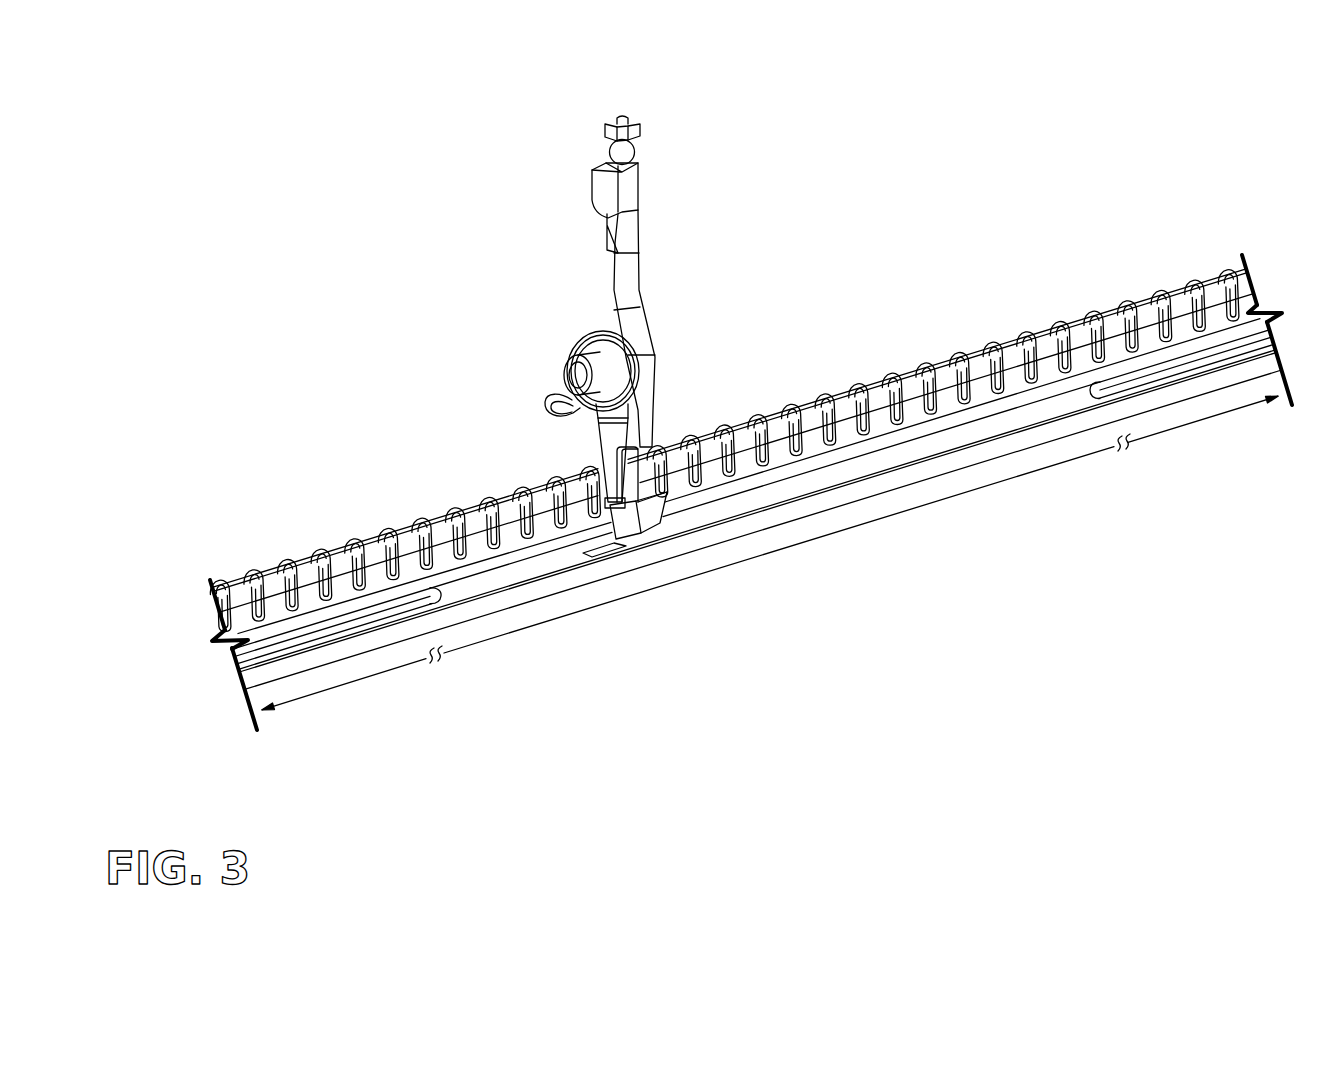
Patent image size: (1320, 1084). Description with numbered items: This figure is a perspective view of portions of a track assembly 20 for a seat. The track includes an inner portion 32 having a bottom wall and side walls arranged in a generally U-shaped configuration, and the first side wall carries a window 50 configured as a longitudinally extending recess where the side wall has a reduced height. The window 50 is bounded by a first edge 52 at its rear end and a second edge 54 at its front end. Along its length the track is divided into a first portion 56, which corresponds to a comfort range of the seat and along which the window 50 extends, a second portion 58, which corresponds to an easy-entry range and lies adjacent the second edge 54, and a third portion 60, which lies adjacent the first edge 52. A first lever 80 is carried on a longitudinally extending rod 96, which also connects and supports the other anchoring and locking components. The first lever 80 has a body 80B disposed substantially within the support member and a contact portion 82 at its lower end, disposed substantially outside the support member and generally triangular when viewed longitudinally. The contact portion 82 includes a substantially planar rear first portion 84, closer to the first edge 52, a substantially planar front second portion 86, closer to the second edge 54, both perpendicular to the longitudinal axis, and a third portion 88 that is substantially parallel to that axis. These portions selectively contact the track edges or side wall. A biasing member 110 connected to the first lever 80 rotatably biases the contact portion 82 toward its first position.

The rail assembly 20 is at (751, 453).
The inner portion 32 is at (1163, 296).
The window 50 is at (783, 492).
The first edge 52 is at (440, 593).
The second edge 54 is at (1097, 388).
The first portion 56 is at (843, 530).
The second portion 58 is at (1188, 425).
The third portion 60 is at (362, 680).
The first lever 80 is at (611, 396).
The body 80B is at (642, 313).
The contact portion 82 is at (660, 505).
The first portion 84 is at (627, 527).
The second portion 86 is at (656, 513).
The third portion 88 is at (650, 532).
The rod 96 is at (565, 362).
The biasing member 110 is at (606, 340).